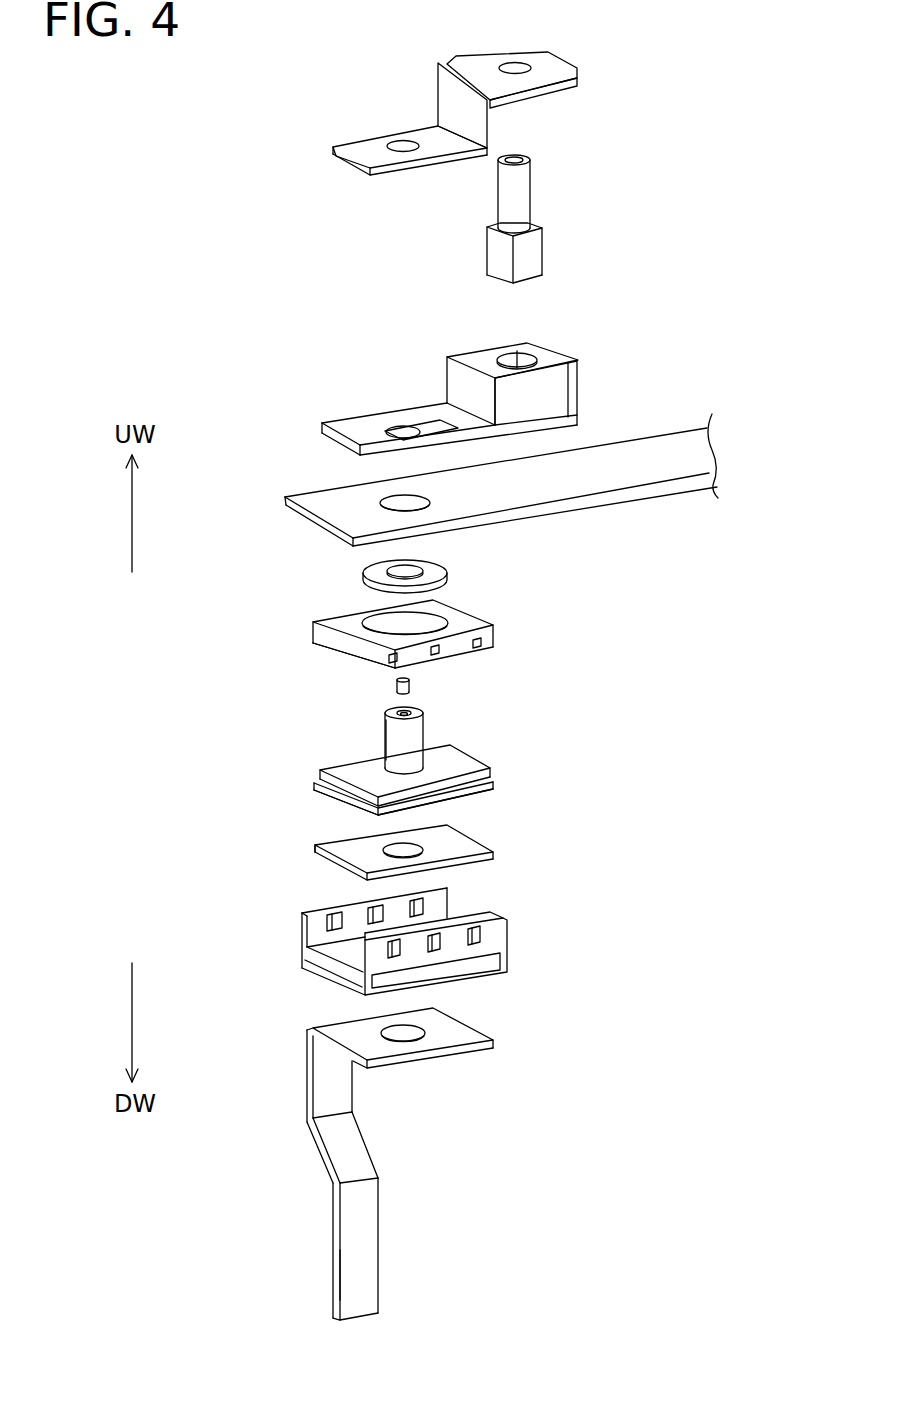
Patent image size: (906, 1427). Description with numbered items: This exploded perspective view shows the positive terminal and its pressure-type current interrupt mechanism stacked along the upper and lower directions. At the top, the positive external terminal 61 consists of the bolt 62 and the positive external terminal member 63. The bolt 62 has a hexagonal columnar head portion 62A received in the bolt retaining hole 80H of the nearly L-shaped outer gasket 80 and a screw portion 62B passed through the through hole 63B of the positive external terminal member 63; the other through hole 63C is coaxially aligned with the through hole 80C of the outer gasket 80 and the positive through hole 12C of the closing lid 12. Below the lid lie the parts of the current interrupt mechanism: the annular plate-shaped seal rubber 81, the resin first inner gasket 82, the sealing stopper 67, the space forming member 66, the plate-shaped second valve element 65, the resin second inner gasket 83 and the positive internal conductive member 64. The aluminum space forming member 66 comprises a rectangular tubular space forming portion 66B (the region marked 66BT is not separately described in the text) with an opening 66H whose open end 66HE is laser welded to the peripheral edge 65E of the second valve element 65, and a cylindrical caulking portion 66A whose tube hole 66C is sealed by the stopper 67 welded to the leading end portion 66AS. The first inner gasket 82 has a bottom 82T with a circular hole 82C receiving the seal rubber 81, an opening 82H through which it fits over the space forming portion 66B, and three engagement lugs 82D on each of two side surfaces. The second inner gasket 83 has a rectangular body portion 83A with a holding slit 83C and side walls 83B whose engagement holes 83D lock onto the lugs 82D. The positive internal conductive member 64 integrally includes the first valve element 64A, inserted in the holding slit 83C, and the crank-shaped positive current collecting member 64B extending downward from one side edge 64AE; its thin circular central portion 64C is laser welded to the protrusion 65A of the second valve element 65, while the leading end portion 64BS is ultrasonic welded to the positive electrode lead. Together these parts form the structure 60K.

The closing lid 12 is at (285, 500).
The positive through hole 12C is at (396, 496).
The structure 60K is at (733, 593).
The positive external terminal 61 is at (250, 157).
The bolt 62 is at (486, 247).
The hexagonal columnar head portion 62A is at (530, 252).
The screw portion 62B is at (518, 200).
The positive external terminal member 63 is at (334, 154).
The through hole 63B is at (508, 65).
The through hole 63C is at (396, 139).
The positive internal conductive member 64 is at (682, 1032).
The first valve element 64A is at (492, 1050).
The side edge 64AE is at (310, 1031).
The positive current collecting member 64B is at (372, 1195).
The leading end portion 64BS is at (352, 1270).
The central portion 64C is at (392, 1030).
The second valve element 65 is at (495, 848).
The protrusion 65A is at (396, 855).
The peripheral edge 65E is at (318, 850).
The space forming member 66 is at (690, 692).
The caulking portion 66A is at (425, 735).
The leading end portion 66AS is at (390, 725).
The space forming portion 66B is at (490, 772).
The top surface of base portion 66BT is at (340, 762).
The tube hole 66C is at (409, 713).
The opening 66H is at (464, 797).
The open end 66HE is at (332, 800).
The sealing stopper 67 is at (395, 685).
The outer gasket 80 is at (578, 373).
The through hole 80C is at (403, 428).
The bolt retaining hole 80H is at (530, 357).
The seal rubber 81 is at (440, 566).
The first inner gasket 82 is at (495, 622).
The circular hole 82C is at (365, 620).
The engagement lugs 82D is at (480, 647).
The opening 82H is at (323, 658).
The bottom 82T is at (335, 614).
The second inner gasket 83 is at (482, 900).
The body portion 83A is at (302, 955).
The side walls 83B is at (388, 948).
The holding slit 83C is at (497, 962).
The engagement holes 83D is at (482, 937).